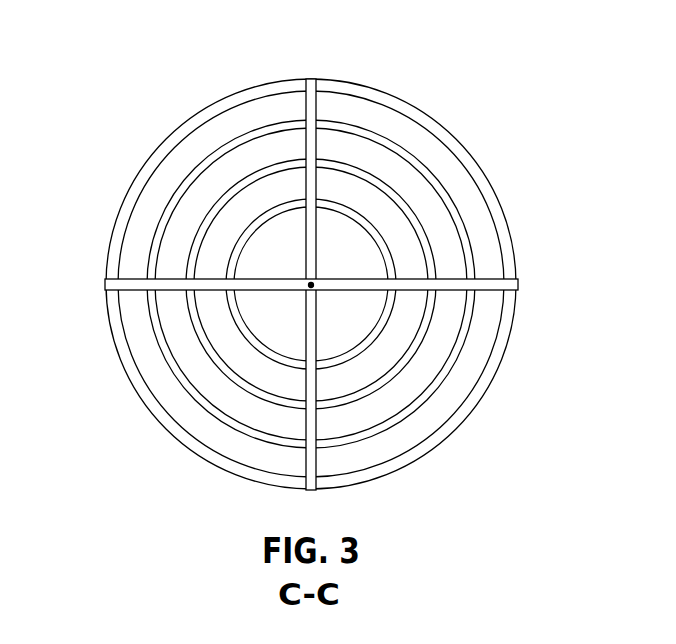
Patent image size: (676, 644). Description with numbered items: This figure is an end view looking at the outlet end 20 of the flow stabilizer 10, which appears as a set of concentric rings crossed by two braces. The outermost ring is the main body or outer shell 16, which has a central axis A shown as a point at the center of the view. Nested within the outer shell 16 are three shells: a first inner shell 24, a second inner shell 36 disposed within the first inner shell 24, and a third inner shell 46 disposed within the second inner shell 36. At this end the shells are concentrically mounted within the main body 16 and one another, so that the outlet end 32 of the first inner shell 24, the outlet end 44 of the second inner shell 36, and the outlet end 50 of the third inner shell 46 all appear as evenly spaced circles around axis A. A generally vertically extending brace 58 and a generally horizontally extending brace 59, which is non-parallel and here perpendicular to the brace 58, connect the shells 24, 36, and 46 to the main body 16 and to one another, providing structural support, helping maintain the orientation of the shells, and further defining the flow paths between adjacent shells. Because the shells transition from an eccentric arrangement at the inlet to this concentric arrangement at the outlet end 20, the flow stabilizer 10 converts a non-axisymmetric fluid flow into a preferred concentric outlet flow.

The flow stabilizer 10 is at (517, 145).
The outer shell 16 is at (482, 177).
The outlet end 20 is at (418, 105).
The first inner shell 24 is at (475, 250).
The outlet end of first inner shell 32 is at (467, 238).
The second inner shell 36 is at (428, 325).
The outlet end of second inner shell 44 is at (420, 347).
The third inner shell 46 is at (365, 350).
The outlet end of third inner shell 50 is at (350, 365).
The vertically extending brace 58 is at (312, 128).
The horizontally extending brace 59 is at (127, 282).
The axis A is at (308, 286).